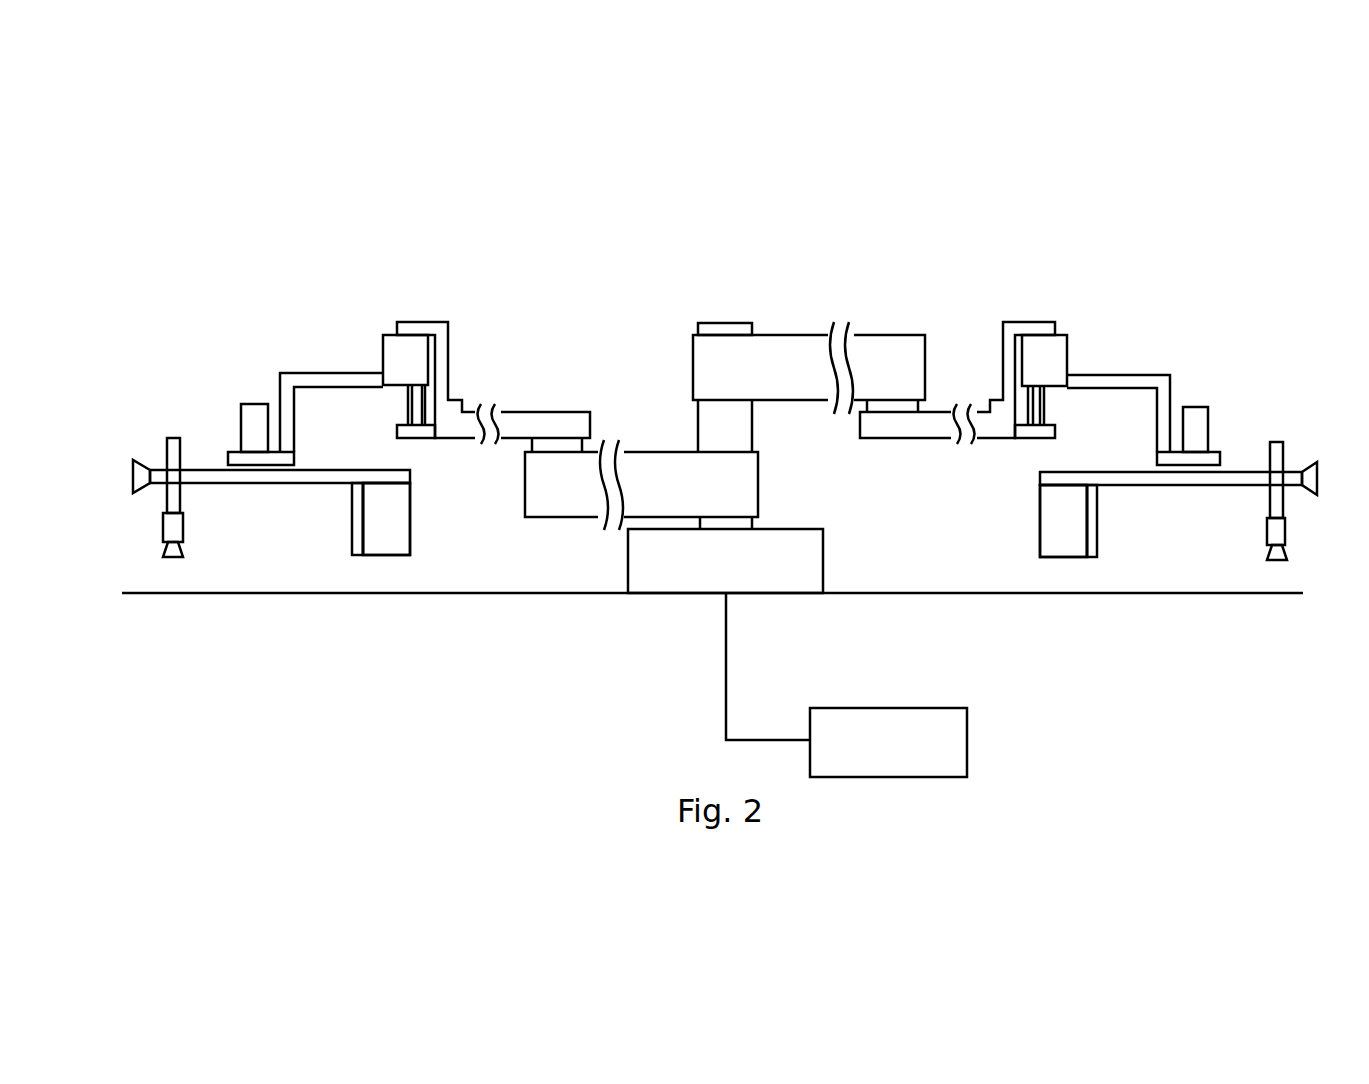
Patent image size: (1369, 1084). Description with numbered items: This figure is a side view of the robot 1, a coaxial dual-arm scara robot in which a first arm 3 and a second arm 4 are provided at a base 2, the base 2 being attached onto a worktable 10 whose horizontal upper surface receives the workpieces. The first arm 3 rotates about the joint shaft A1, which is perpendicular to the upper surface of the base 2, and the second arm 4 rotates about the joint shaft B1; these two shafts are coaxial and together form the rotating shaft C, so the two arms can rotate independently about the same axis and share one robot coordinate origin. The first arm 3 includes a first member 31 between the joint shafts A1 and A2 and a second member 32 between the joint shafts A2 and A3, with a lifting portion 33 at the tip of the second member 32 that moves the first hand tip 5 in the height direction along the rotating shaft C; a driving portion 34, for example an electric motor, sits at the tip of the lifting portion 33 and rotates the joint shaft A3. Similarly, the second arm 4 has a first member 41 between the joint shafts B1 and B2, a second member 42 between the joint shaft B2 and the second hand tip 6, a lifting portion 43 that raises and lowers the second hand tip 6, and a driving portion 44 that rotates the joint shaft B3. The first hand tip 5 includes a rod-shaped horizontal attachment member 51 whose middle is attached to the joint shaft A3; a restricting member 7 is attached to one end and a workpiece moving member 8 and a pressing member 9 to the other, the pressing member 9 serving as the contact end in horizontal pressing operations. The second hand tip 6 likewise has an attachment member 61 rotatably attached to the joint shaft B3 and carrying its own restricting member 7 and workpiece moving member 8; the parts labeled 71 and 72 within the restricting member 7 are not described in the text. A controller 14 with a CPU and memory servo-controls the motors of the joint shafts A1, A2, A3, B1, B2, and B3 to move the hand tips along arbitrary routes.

The robot 1 is at (760, 203).
The base 2 is at (677, 582).
The first arm 3 is at (604, 290).
The second arm 4 is at (860, 290).
The first hand tip 5 is at (178, 374).
The second hand tip 6 is at (1275, 378).
The restricting member 7 is at (405, 535).
The workpiece moving member 8 is at (178, 530).
The pressing member 9 is at (128, 472).
The worktable 10 is at (238, 595).
The controller 14 is at (967, 745).
The first member 31 is at (645, 462).
The second member 32 is at (513, 418).
The lifting portion 33 is at (392, 338).
The driving portion 34 is at (252, 410).
The first member 41 is at (780, 345).
The second member 42 is at (935, 440).
The lifting portion 43 is at (1060, 340).
The driving portion 44 is at (1198, 412).
The attachment member 51 is at (320, 470).
The attachment member 61 is at (1128, 477).
The finger 71 is at (365, 525).
The finger 72 is at (385, 508).
The joint shaft A1 is at (760, 478).
The joint shaft A2 is at (548, 520).
The joint shaft A3 is at (253, 490).
The joint shaft B1 is at (692, 357).
The joint shaft B2 is at (905, 333).
The joint shaft B3 is at (1198, 492).
The rotating shaft C is at (722, 326).